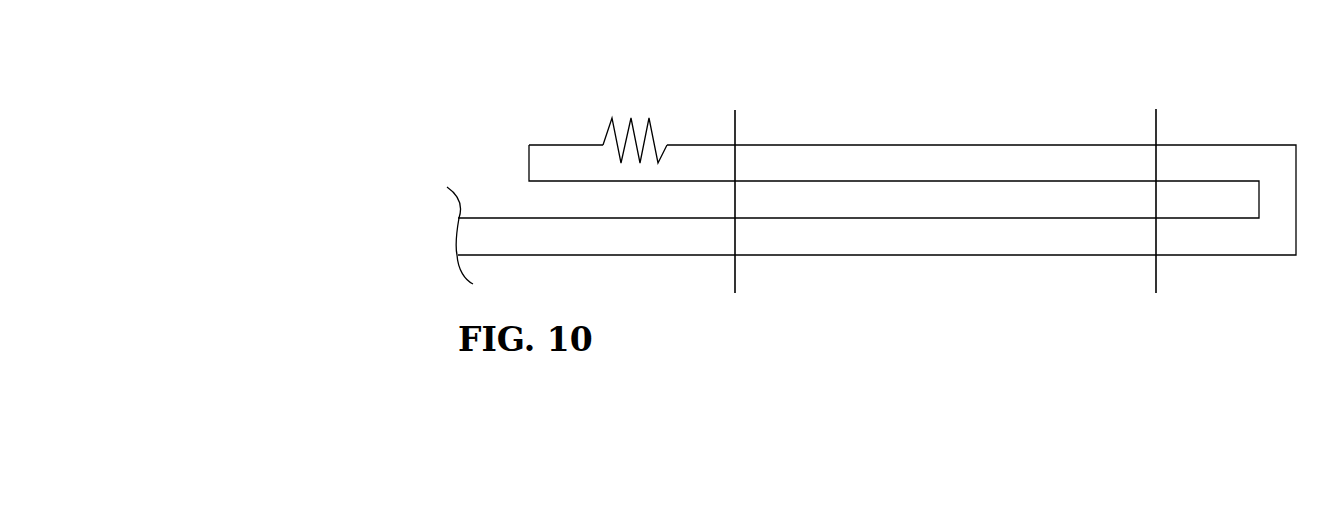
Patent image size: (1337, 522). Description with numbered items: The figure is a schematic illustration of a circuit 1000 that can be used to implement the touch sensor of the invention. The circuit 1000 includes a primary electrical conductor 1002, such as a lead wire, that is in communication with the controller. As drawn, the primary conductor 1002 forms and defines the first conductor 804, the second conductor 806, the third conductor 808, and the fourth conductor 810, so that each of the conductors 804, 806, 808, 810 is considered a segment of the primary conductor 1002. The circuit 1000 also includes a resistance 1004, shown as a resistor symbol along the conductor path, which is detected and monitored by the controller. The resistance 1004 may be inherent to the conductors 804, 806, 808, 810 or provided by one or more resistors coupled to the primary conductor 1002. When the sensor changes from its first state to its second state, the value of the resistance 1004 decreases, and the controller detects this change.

The circuit 1000 is at (424, 116).
The primary electrical conductor 1002 is at (617, 255).
The resistance 1004 is at (652, 130).
The first conductor 804 is at (845, 144).
The second conductor 806 is at (900, 180).
The third conductor 808 is at (953, 218).
The fourth conductor 810 is at (1046, 255).